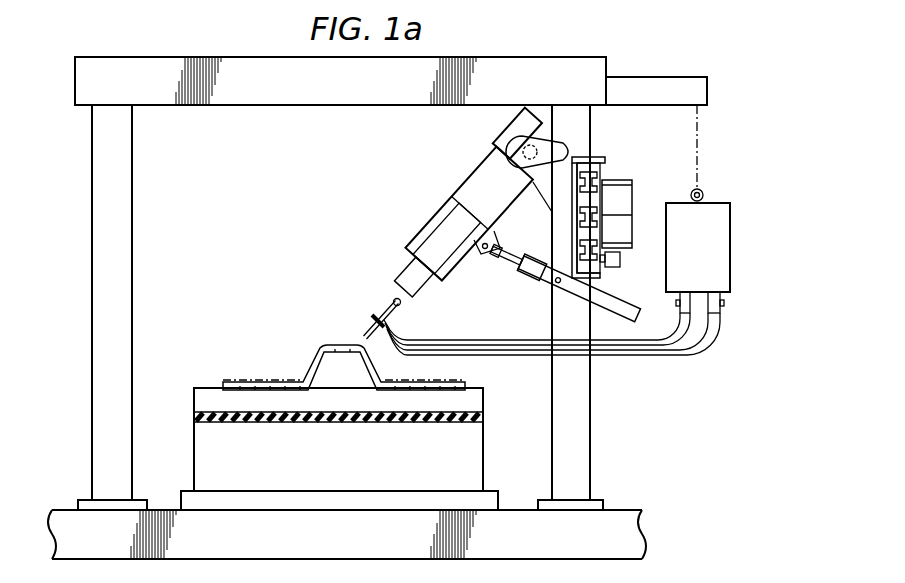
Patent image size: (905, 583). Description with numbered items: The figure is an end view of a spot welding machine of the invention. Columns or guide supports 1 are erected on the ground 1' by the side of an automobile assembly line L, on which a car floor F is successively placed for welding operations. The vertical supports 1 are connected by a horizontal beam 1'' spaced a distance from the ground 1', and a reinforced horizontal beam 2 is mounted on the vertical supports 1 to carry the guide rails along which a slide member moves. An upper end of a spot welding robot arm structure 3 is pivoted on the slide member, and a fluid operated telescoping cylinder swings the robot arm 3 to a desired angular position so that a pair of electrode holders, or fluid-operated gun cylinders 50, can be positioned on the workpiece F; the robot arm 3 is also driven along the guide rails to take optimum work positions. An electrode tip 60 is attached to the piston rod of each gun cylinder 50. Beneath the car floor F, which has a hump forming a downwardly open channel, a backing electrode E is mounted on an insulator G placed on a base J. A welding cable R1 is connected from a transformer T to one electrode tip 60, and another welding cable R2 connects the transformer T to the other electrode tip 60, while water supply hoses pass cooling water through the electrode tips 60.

The column 1 is at (344, 307).
The ground 1' is at (351, 518).
The horizontal beam 1'' is at (391, 123).
The reinforced horizontal beam 2 is at (625, 190).
The spot welding robot arm structure 3 is at (462, 192).
The fluid-operated gun cylinder 50 is at (382, 325).
The electrode tip 60 is at (361, 342).
The automobile assembly line L is at (365, 180).
The car floor F is at (318, 345).
The backing electrode E is at (268, 396).
The insulator G is at (213, 412).
The base J is at (205, 455).
The transformer T is at (725, 206).
The welding cable R1 is at (638, 352).
The welding cable R2 is at (673, 340).